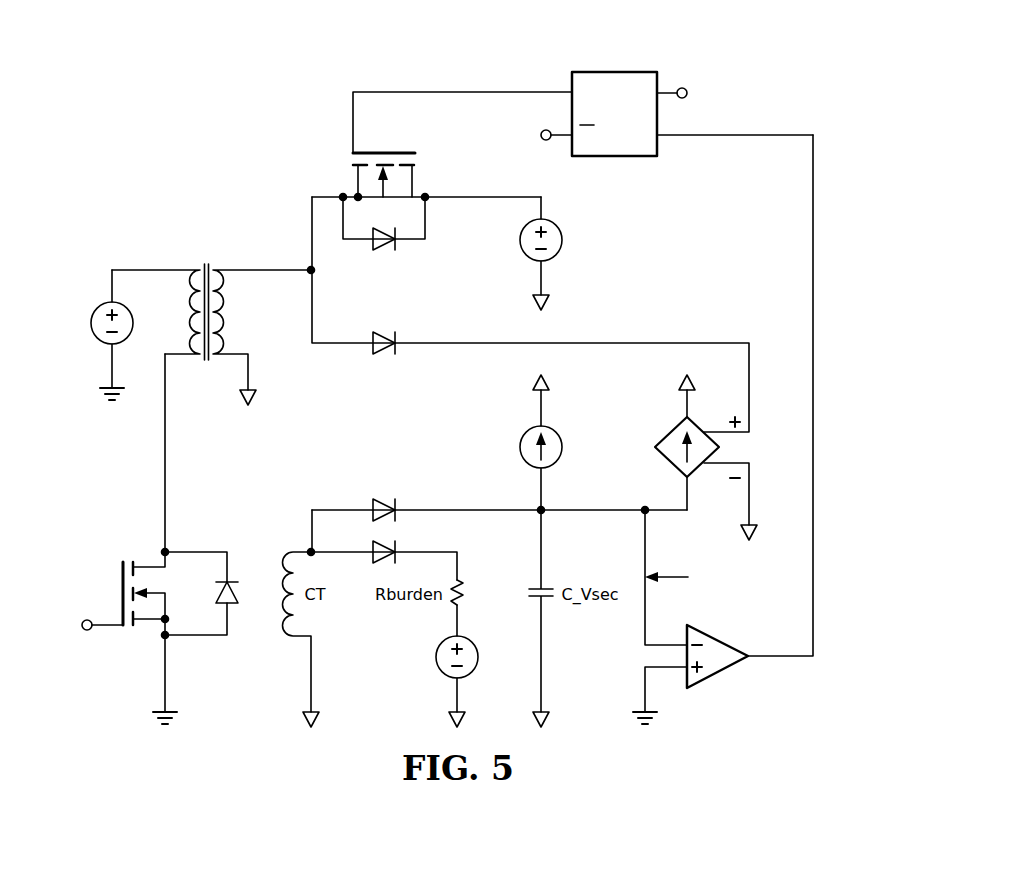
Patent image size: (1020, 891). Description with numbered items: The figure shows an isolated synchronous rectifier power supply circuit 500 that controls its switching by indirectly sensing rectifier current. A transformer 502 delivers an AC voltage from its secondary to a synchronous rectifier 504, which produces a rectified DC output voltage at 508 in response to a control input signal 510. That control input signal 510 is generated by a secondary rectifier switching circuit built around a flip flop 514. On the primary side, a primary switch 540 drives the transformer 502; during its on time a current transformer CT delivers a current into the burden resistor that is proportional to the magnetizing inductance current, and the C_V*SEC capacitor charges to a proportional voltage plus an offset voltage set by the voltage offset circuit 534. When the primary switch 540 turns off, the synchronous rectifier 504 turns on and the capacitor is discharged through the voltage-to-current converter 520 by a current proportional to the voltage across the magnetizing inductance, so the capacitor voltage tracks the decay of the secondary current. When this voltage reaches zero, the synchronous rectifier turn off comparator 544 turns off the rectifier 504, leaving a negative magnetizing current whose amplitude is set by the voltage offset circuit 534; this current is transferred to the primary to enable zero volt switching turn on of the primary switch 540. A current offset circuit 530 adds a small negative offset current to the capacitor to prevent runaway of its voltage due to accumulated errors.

The isolated synchronous rectifier power supply circuit 500 is at (193, 92).
The transformer 502 is at (204, 253).
The synchronous rectifier 504 is at (404, 150).
The rectified direct current output voltage 508 is at (562, 243).
The control input signal 510 is at (472, 92).
The flip flop 514 is at (613, 157).
The voltage-to-current converter 520 is at (668, 428).
The current offset circuit 530 is at (520, 447).
The voltage offset circuit 534 is at (436, 656).
The primary switch 540 is at (122, 585).
The synchronous rectifier turn off comparator 544 is at (718, 672).